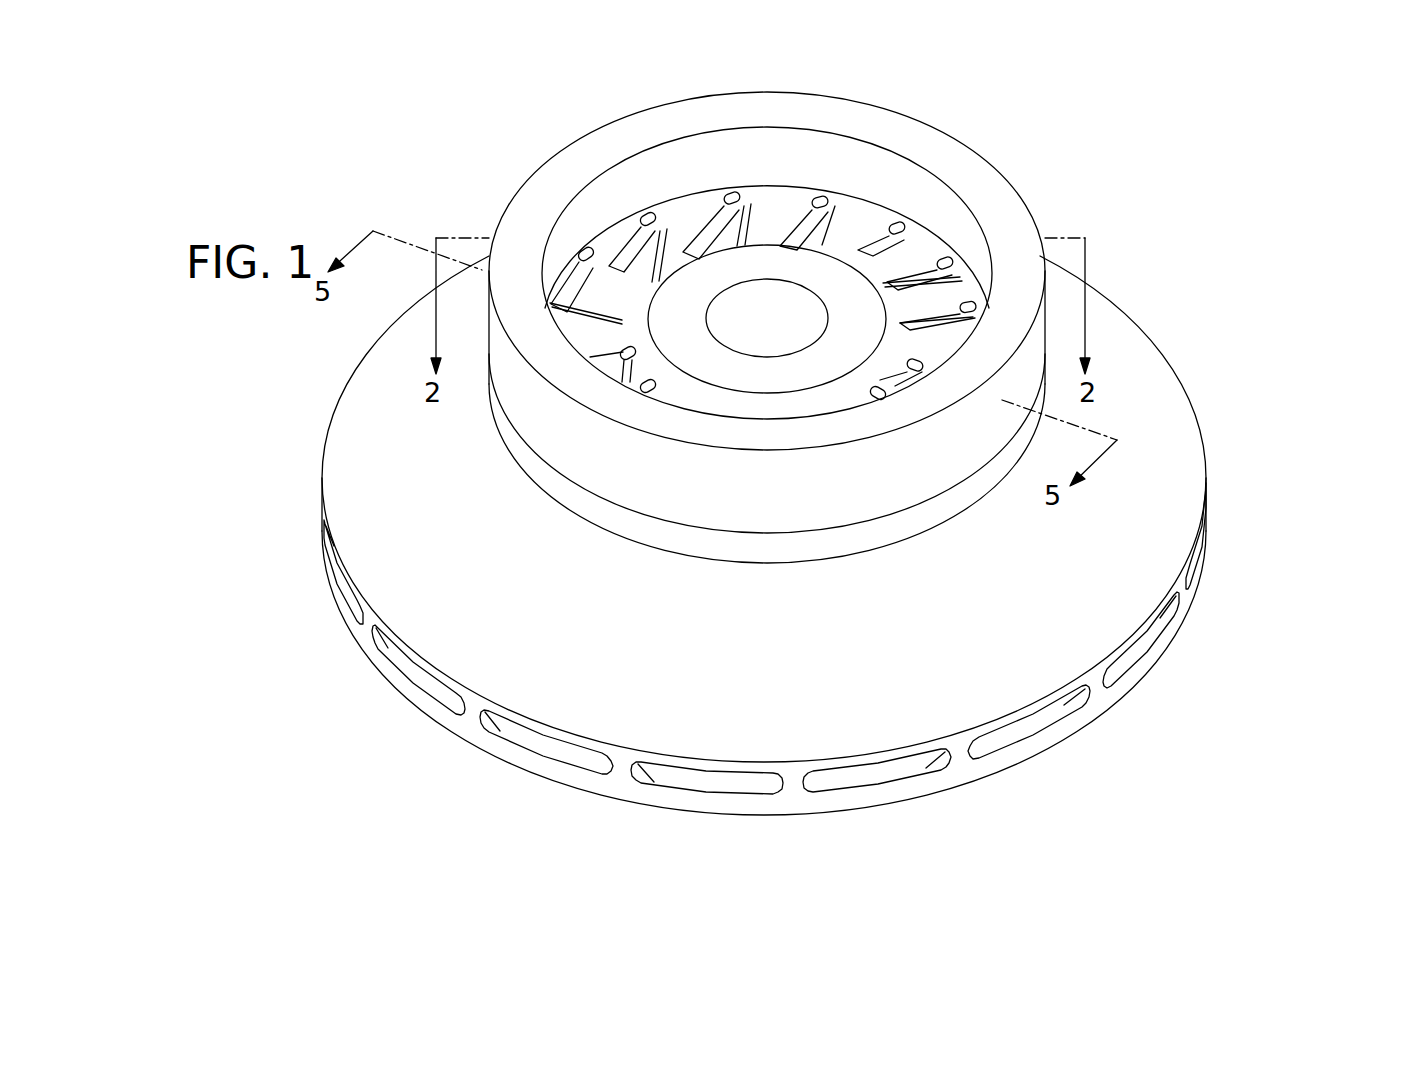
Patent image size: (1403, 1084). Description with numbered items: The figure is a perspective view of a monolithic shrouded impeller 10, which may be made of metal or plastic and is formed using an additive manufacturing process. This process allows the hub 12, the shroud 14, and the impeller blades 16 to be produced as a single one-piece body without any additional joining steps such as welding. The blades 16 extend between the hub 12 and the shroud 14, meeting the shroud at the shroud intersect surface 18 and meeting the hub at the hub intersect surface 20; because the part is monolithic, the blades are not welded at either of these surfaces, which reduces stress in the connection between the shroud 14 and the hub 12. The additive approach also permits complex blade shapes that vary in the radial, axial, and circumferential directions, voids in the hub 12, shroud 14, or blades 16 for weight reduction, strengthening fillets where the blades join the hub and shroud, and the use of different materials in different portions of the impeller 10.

The monolithic shrouded impeller 10 is at (1300, 239).
The hub 12 is at (747, 377).
The shroud 14 is at (617, 133).
The impeller blades 16 is at (812, 194).
The shroud intersect surface 18 is at (657, 213).
The hub intersect surface 20 is at (900, 367).